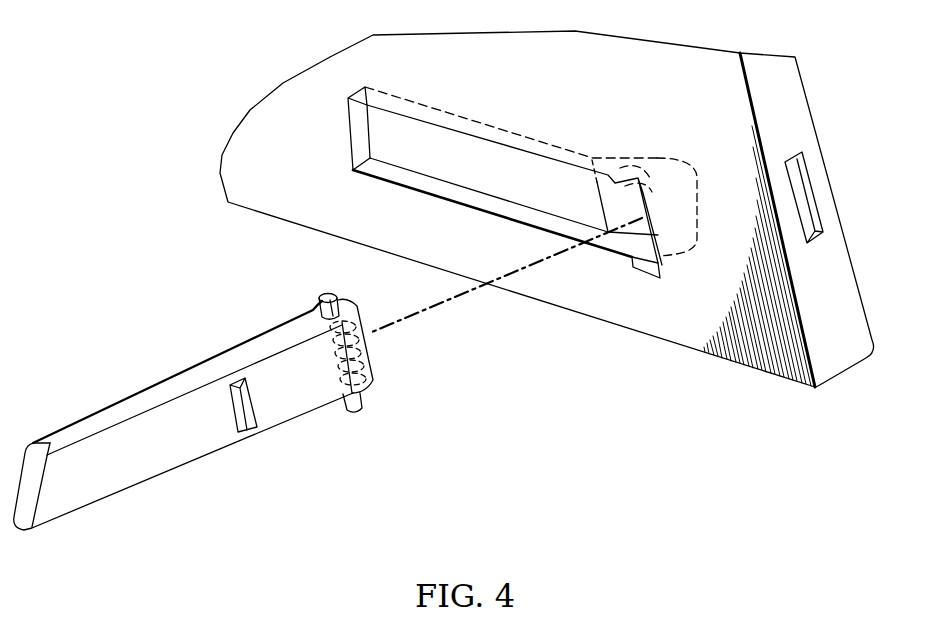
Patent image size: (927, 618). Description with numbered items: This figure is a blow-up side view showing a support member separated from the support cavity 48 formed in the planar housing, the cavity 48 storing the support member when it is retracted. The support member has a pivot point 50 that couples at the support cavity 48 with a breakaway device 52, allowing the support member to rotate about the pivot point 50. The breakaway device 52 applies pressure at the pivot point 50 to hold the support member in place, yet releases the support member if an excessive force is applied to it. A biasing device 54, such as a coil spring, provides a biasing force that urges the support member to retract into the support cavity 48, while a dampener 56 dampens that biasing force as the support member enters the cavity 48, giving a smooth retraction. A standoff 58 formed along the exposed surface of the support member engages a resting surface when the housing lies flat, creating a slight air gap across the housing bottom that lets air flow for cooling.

The support cavity 48 is at (553, 180).
The pivot point 50 is at (325, 296).
The breakaway device 52 is at (642, 277).
The biasing device 54 is at (328, 403).
The dampener 56 is at (352, 304).
The standoff 58 is at (238, 408).